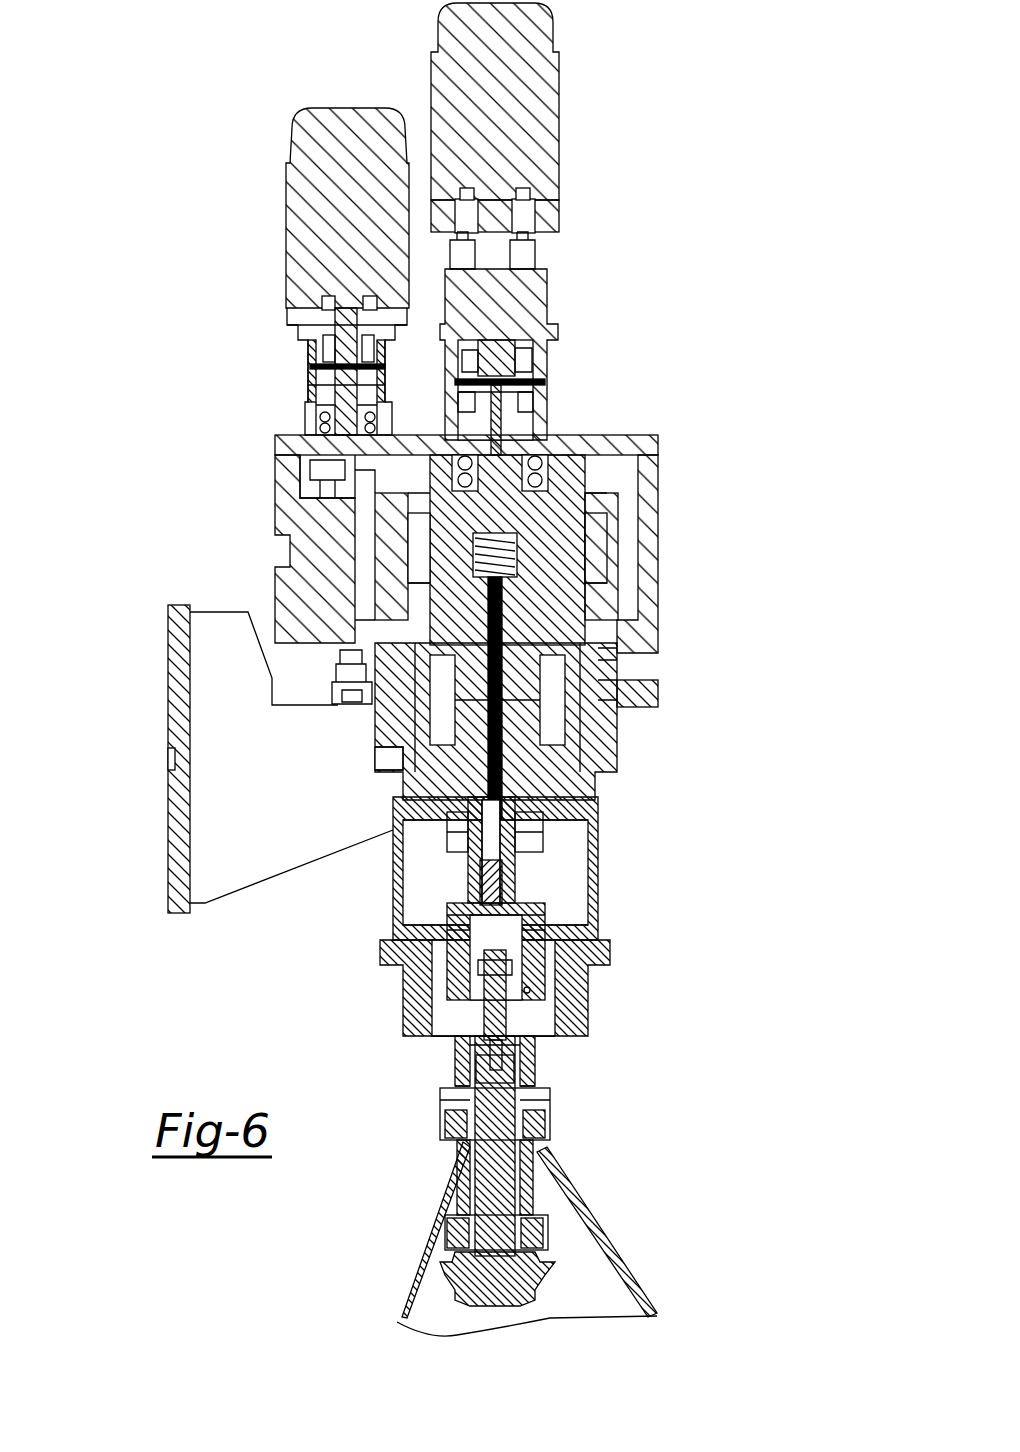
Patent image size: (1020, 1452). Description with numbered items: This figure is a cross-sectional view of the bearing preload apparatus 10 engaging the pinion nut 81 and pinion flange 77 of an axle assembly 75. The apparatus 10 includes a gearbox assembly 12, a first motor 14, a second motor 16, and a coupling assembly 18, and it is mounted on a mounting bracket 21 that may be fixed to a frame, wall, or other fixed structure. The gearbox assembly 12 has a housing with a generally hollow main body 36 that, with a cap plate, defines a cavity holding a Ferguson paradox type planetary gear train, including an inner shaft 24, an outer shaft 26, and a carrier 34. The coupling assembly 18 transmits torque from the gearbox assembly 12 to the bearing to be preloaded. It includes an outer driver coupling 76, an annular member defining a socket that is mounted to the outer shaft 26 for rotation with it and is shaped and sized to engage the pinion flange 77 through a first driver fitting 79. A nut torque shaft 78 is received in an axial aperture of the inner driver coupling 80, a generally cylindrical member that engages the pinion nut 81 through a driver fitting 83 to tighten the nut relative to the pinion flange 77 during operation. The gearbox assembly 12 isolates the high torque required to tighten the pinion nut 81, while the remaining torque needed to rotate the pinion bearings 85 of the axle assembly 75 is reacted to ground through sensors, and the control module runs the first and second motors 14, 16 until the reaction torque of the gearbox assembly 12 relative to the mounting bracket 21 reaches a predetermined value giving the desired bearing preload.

The bearing preload apparatus 10 is at (150, 128).
The first motor 14 is at (570, 132).
The second motor 16 is at (301, 113).
The gearbox assembly 12 is at (662, 502).
The carrier 34 is at (590, 540).
The main body 36 is at (647, 578).
The inner shaft 24 is at (545, 647).
The outer shaft 26 is at (575, 692).
The mounting bracket 21 is at (165, 877).
The coupling assembly 18 is at (605, 870).
The first driver fitting 79 is at (410, 990).
The outer driver coupling 76 is at (598, 890).
The nut torque shaft 78 is at (478, 875).
The inner driver coupling 80 is at (535, 957).
The driver fitting 83 is at (522, 1025).
The pinion flange 77 is at (458, 1040).
The pinion nut 81 is at (512, 1072).
The axle assembly 75 is at (560, 1143).
The pinion bearings 85 is at (460, 1130).